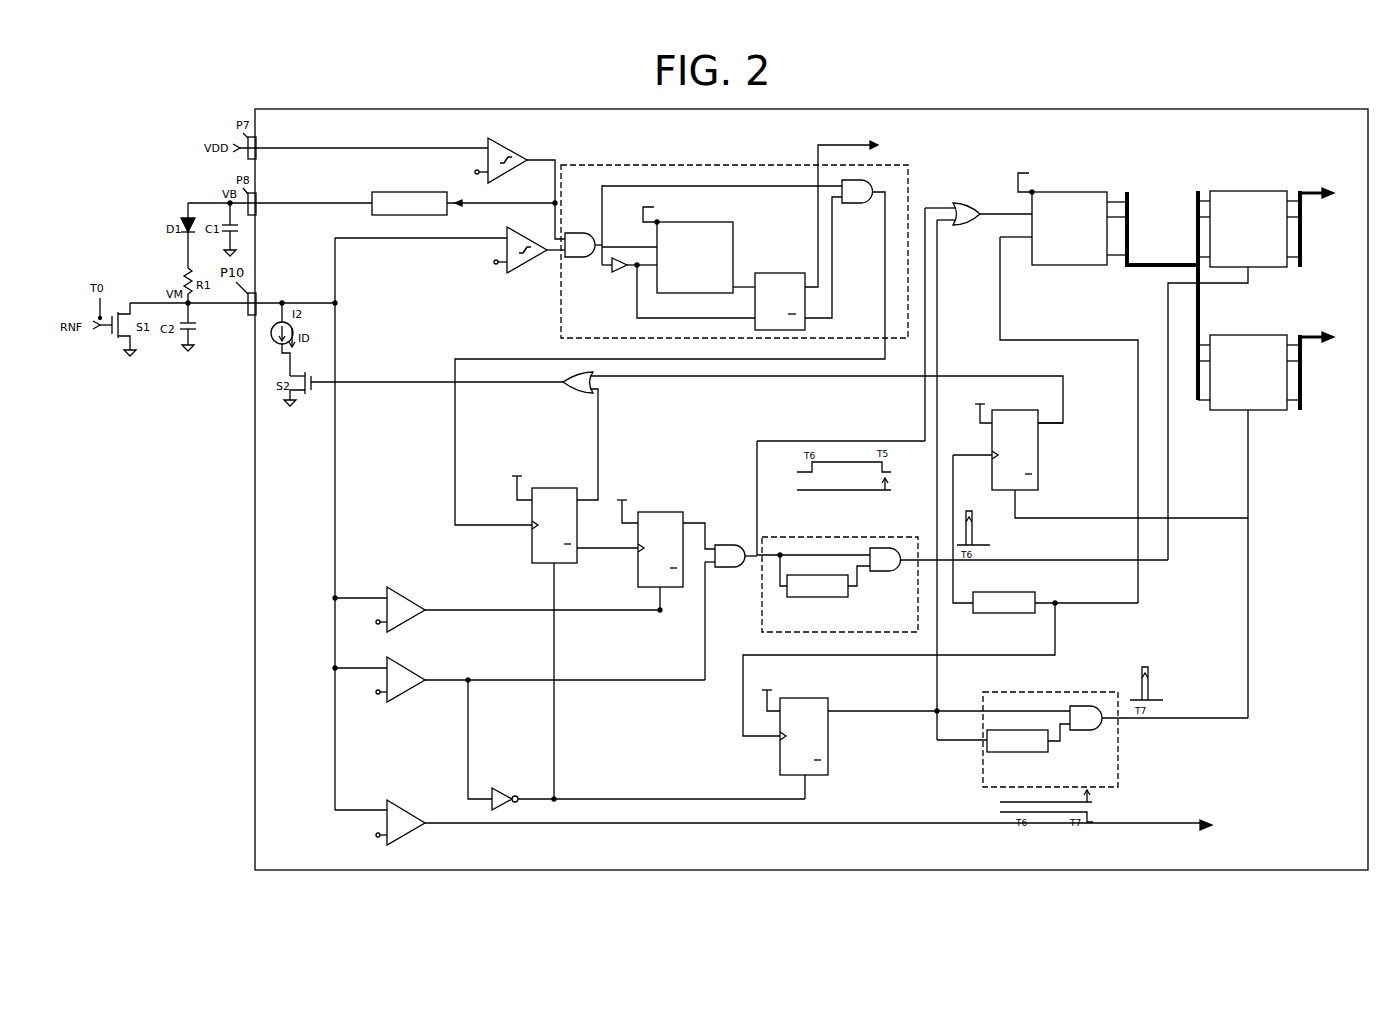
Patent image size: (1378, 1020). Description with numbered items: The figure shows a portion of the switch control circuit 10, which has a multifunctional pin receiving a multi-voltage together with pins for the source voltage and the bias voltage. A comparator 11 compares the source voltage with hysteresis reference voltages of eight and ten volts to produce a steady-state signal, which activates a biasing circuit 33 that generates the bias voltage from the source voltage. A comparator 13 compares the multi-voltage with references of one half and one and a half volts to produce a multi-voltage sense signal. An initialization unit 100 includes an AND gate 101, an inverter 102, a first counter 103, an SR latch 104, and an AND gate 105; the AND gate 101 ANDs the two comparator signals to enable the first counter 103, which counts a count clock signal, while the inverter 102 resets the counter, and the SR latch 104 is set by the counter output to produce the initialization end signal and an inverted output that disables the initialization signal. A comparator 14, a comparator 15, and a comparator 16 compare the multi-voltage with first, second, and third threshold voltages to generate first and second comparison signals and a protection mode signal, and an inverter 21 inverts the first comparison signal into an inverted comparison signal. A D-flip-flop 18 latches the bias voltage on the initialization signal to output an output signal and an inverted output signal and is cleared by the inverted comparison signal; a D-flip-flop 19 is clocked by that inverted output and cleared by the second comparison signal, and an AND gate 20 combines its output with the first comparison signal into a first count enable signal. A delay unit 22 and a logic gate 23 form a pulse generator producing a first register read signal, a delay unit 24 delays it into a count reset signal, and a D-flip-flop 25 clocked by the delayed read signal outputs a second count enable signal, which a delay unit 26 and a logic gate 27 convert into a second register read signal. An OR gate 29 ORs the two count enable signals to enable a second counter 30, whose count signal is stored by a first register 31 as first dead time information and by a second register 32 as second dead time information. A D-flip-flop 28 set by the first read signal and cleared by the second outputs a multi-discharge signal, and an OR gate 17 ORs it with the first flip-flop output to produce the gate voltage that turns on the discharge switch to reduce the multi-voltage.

The switch control circuit 10 is at (1034, 109).
The comparator 11 is at (506, 174).
The comparator 13 is at (517, 273).
The comparator 14 is at (404, 702).
The comparator 15 is at (404, 632).
The comparator 16 is at (404, 845).
The OR gate 17 is at (585, 393).
The D-flip-flop 18 is at (563, 488).
The D-flip-flop 19 is at (670, 512).
The AND gate 20 is at (733, 567).
The inverter 21 is at (503, 788).
The delay unit 22 is at (817, 597).
The logic gate 23 is at (886, 571).
The delay unit 24 is at (1007, 613).
The D-flip-flop 25 is at (811, 698).
The delay unit 26 is at (1019, 752).
The logic gate 27 is at (1086, 730).
The D-flip-flop 28 is at (1025, 410).
The OR gate 29 is at (968, 225).
The second counter 30 is at (1096, 192).
The first register 31 is at (1274, 191).
The second register 32 is at (1274, 335).
The biasing circuit 33 is at (405, 214).
The initialization unit 100 is at (908, 190).
The AND gate 101 is at (582, 233).
The inverter 102 is at (621, 272).
The first counter 103 is at (720, 222).
The SR latch 104 is at (782, 273).
The AND gate 105 is at (857, 203).